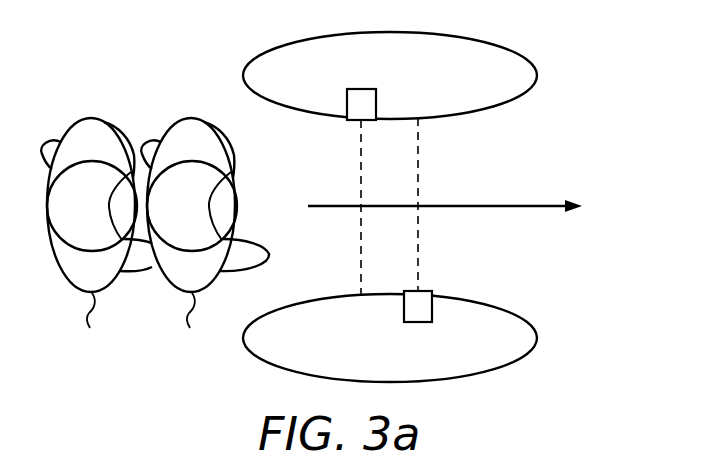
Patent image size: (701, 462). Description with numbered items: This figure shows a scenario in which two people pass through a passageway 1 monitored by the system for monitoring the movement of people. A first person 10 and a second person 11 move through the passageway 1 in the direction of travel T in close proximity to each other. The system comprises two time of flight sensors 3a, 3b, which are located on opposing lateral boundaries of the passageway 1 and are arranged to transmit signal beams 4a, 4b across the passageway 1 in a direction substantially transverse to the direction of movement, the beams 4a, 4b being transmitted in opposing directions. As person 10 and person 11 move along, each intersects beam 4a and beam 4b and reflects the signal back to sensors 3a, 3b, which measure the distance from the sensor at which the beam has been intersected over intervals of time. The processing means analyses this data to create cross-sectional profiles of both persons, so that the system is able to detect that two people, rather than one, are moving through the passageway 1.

The passageway 1 is at (435, 207).
The time of flight sensor 3a is at (376, 98).
The time of flight sensor 3b is at (404, 313).
The signal beam 4a is at (362, 163).
The signal beam 4b is at (418, 254).
The person 10 is at (205, 235).
The person 11 is at (96, 235).